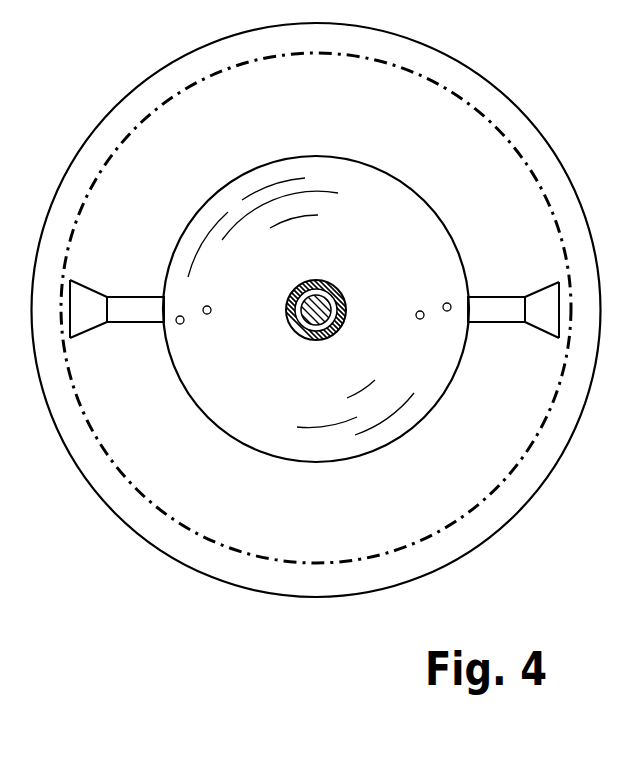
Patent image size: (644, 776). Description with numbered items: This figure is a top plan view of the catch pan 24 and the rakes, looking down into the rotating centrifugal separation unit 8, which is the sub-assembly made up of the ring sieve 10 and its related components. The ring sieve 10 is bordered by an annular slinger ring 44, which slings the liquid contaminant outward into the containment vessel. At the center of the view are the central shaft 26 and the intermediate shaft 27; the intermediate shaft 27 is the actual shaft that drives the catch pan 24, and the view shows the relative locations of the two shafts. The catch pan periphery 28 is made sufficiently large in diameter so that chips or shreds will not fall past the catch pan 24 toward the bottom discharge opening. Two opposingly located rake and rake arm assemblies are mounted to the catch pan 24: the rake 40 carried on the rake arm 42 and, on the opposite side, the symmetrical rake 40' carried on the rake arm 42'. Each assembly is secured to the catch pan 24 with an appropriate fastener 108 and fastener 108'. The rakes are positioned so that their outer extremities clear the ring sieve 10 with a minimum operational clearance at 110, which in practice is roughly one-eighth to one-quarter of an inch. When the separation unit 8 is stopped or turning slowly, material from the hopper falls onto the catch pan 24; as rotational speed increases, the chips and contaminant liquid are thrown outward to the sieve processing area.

The rotating centrifugal separation unit 8 is at (347, 123).
The ring sieve 10 is at (238, 68).
The catch pan 24 is at (238, 415).
The central shaft 26 is at (338, 312).
The intermediate shaft 27 is at (307, 282).
The catch pan periphery 28 is at (354, 495).
The rake 40 is at (91, 284).
The rake 40' is at (538, 290).
The rake arm 42 is at (135, 291).
The rake arm 42' is at (496, 330).
The annular slinger ring 44 is at (559, 163).
The fastener 108 is at (224, 292).
The fastener 108' is at (404, 339).
The minimum operational clearance 110 is at (69, 344).